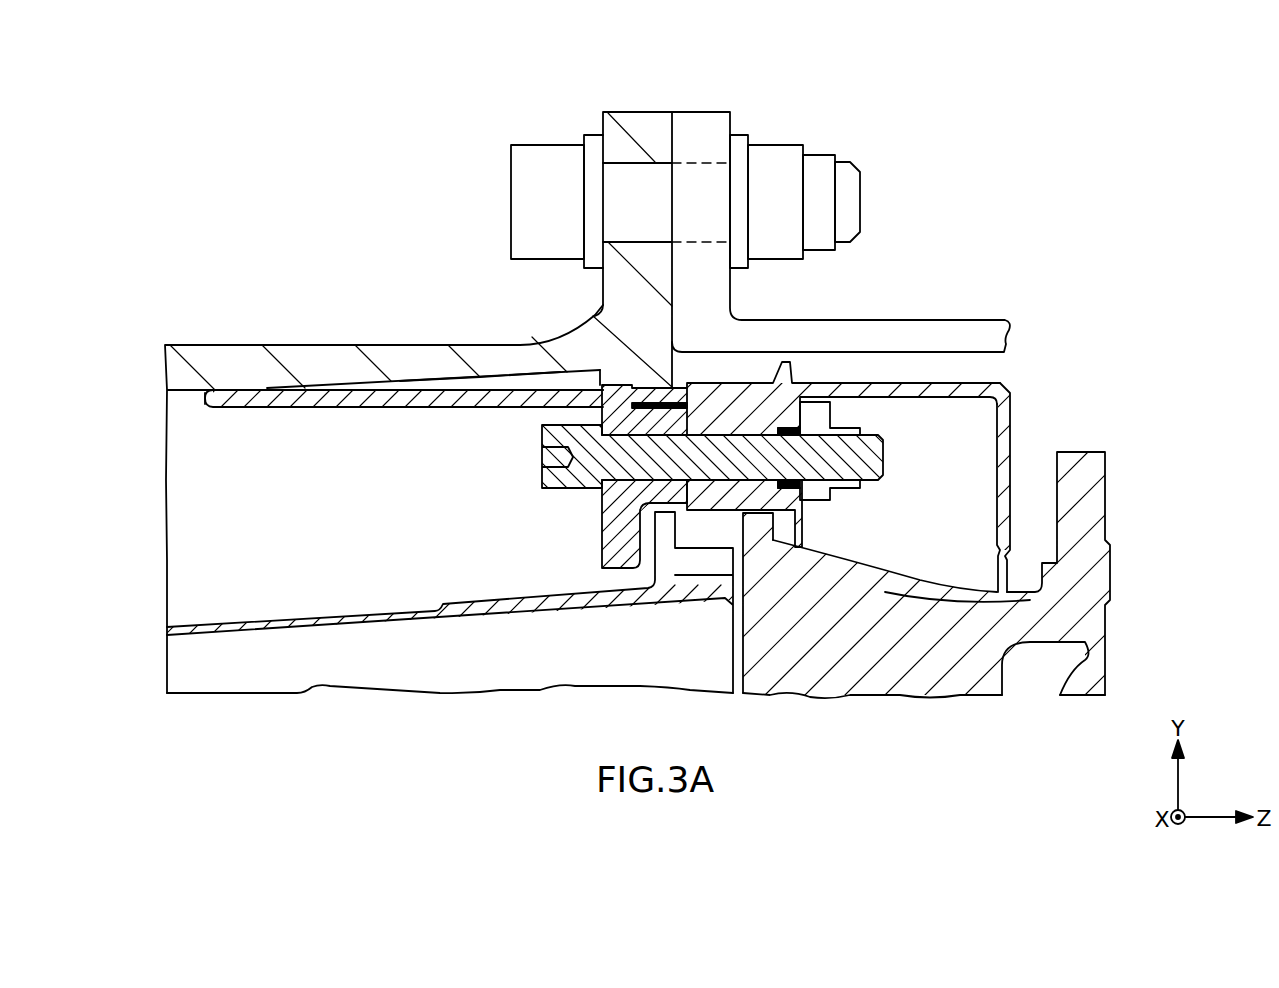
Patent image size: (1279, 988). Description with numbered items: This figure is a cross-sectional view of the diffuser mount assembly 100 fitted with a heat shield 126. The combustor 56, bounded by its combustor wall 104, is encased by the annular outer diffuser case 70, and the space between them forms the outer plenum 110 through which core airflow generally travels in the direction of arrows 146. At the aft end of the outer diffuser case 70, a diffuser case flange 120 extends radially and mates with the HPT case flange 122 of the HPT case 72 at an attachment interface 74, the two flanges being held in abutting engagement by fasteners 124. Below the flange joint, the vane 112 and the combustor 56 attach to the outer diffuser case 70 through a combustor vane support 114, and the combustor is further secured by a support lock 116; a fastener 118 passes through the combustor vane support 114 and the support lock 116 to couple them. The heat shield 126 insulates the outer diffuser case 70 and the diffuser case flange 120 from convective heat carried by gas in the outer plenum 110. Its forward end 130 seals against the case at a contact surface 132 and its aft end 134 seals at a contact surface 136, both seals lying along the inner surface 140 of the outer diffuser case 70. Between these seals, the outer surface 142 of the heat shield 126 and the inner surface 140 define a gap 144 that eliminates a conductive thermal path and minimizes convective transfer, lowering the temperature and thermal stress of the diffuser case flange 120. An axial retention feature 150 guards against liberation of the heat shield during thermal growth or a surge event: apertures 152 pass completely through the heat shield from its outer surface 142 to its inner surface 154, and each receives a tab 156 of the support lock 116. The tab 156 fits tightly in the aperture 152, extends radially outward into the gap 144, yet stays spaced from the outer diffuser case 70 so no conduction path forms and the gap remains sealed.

The diffuser mount assembly 100 is at (240, 177).
The attachment interface 74 is at (666, 84).
The diffuser case flange 120 is at (623, 120).
The HPT case flange 122 is at (712, 120).
The fasteners 124 is at (515, 160).
The HPT case 72 is at (966, 326).
The outer diffuser case 70 is at (212, 345).
The contact surface 132 is at (262, 385).
The inner surface 140 is at (440, 378).
The gap 144 is at (516, 376).
The axial retention feature 150 is at (596, 362).
The apertures 152 is at (650, 370).
The contact surface 136 is at (672, 390).
The aft end 134 is at (690, 400).
The combustor vane support 114 is at (1000, 420).
The forward end 130 is at (209, 398).
The heat shield 126 is at (317, 403).
The outer surface 142 is at (368, 403).
The inner surface 154 is at (438, 404).
The tab 156 is at (610, 425).
The support lock 116 is at (618, 543).
The fastener 118 is at (870, 455).
The outer plenum 110 is at (352, 550).
The arrows 146 is at (266, 567).
The combustor wall 104 is at (148, 648).
The combustor 56 is at (250, 684).
The vane 112 is at (956, 684).